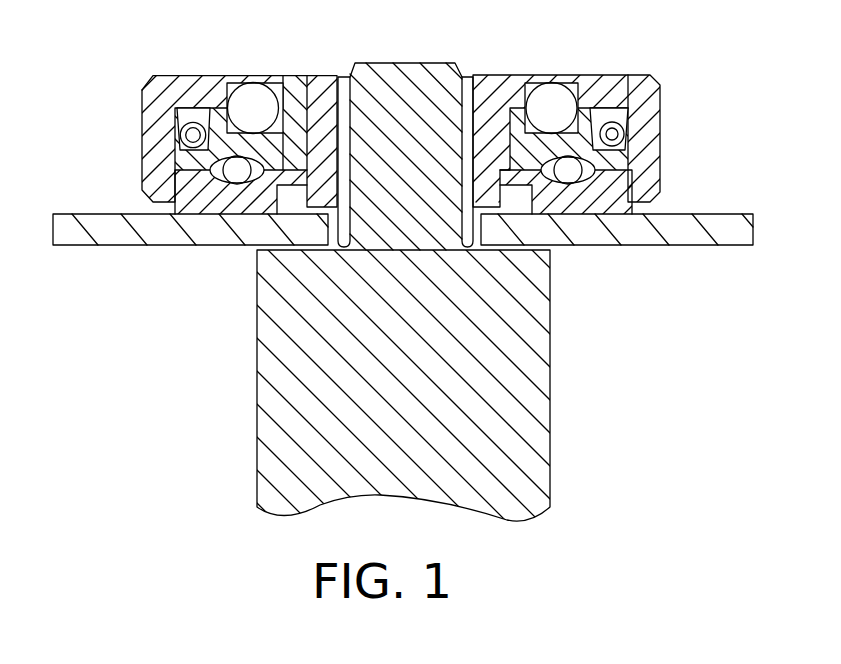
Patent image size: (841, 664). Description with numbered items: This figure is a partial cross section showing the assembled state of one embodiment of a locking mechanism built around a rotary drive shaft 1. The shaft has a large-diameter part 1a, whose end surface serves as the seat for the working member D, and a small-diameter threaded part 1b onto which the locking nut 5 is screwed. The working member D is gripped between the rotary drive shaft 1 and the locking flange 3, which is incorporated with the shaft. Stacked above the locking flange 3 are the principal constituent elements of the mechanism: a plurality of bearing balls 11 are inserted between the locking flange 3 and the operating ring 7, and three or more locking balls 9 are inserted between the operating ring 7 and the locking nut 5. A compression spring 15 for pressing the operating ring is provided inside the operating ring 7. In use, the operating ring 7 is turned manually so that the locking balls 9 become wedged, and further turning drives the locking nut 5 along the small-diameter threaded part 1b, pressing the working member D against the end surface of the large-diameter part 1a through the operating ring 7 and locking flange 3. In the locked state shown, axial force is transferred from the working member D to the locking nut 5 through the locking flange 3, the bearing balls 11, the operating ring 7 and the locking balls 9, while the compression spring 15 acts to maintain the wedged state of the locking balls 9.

The rotary drive shaft 1 is at (413, 73).
The large-diameter part 1a is at (273, 427).
The small-diameter threaded part 1b is at (347, 115).
The locking flange 3 is at (167, 192).
The locking nut 5 is at (192, 90).
The operating ring 7 is at (153, 118).
The locking balls 9 is at (256, 103).
The bearing balls 11 is at (233, 176).
The compression spring 15 is at (618, 133).
The working member D is at (78, 235).